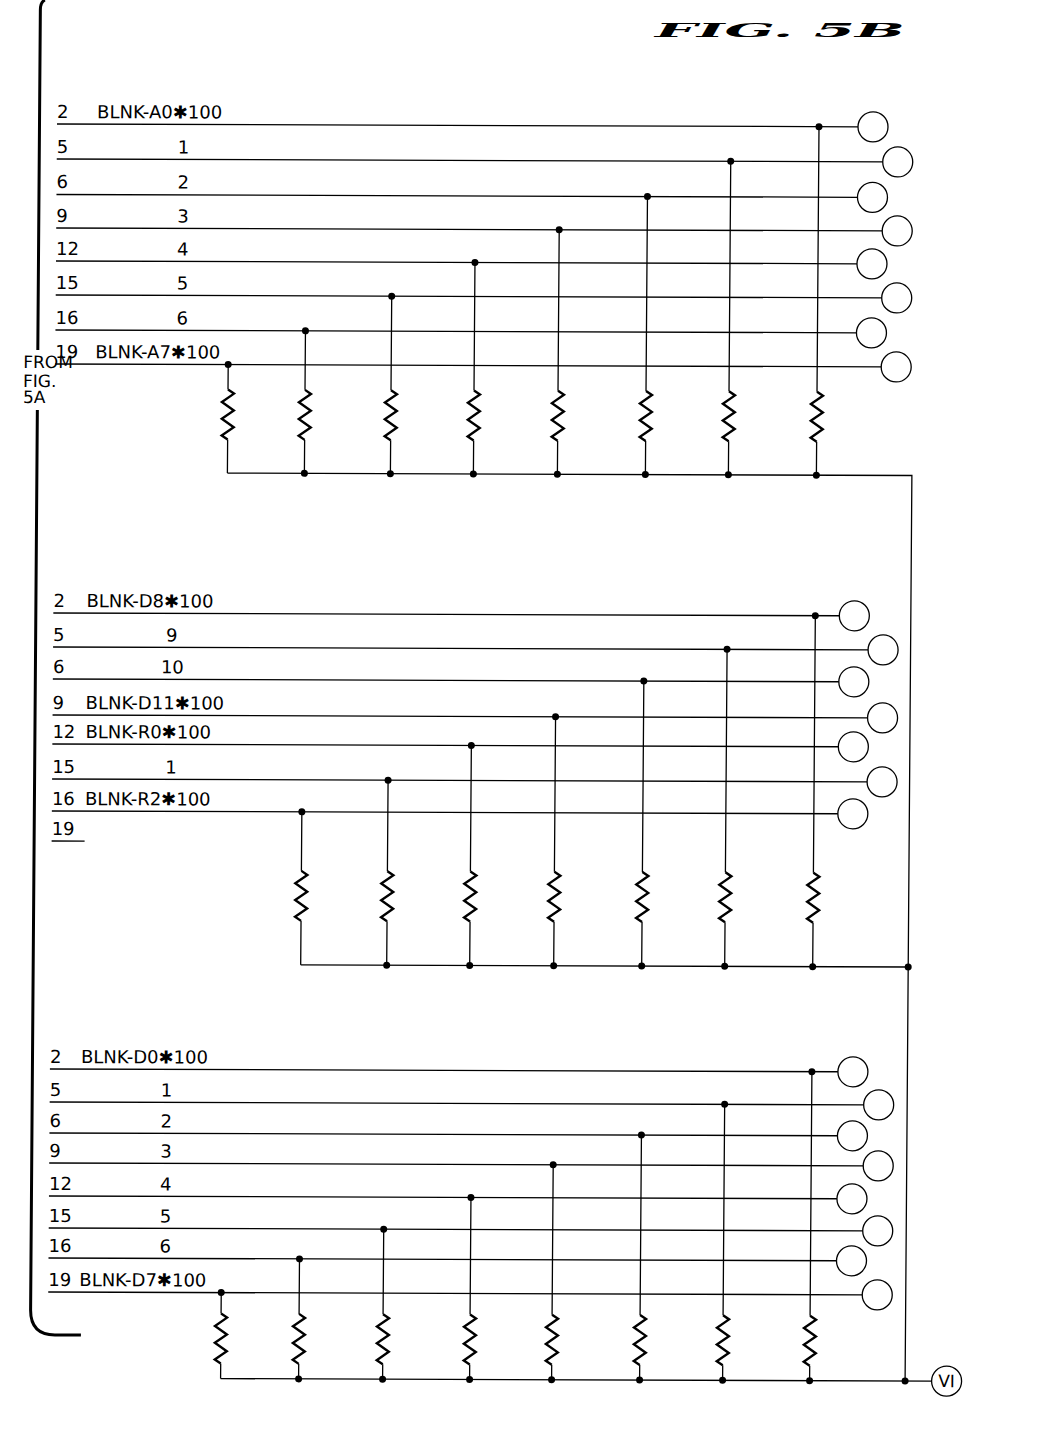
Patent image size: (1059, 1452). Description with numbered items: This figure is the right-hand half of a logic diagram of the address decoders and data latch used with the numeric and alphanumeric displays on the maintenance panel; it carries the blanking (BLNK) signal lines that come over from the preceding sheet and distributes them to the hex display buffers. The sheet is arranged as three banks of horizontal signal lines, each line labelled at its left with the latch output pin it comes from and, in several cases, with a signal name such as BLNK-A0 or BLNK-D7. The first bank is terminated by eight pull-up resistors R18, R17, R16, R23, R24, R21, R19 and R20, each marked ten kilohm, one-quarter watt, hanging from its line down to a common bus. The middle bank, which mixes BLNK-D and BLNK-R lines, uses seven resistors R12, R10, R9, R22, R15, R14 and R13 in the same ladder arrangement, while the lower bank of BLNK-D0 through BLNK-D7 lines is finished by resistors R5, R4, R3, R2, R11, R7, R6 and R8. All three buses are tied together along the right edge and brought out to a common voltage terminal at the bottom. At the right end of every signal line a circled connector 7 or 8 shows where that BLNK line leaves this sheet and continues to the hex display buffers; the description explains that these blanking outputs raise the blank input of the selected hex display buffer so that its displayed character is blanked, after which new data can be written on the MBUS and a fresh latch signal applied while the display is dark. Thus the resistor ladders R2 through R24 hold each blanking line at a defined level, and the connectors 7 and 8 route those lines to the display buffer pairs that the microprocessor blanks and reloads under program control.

The connector to FIG. 7 is at (866, 955).
The connector to FIG. 8 is at (875, 470).
The resistor 10K ohm 1/4W R2 is at (497, 1288).
The resistor 10K ohm 1/4W R3 is at (410, 1304).
The resistor 10K ohm 1/4W R4 is at (326, 1318).
The resistor 10K ohm 1/4W R5 is at (248, 1334).
The resistor 10K ohm 1/4W R6 is at (751, 1242).
The resistor 10K ohm 1/4W R7 is at (668, 1258).
The resistor 10K ohm 1/4W R8 is at (838, 1226).
The resistor 10K ohm 1/4W R9 is at (497, 855).
The resistor 10K ohm 1/4W R10 is at (414, 873).
The resistor 10K ohm 1/4W R11 is at (579, 1272).
The resistor 10K ohm 1/4W R12 is at (328, 886).
The resistor 10K ohm 1/4W R13 is at (841, 791).
The resistor 10K ohm 1/4W R14 is at (753, 808).
The resistor 10K ohm 1/4W R15 is at (670, 824).
The resistor 10K ohm 1/4W R16 is at (417, 385).
The resistor 10K ohm 1/4W R17 is at (331, 402).
The resistor 10K ohm 1/4W R18 is at (254, 417).
The resistor 10K ohm 1/4W R19 is at (756, 318).
The resistor 10K ohm 1/4W R20 is at (844, 301).
The resistor 10K ohm 1/4W R21 is at (673, 335).
The resistor 10K ohm 1/4W R22 is at (582, 841).
The resistor 10K ohm 1/4W R23 is at (500, 368).
The resistor 10K ohm 1/4W R24 is at (585, 352).